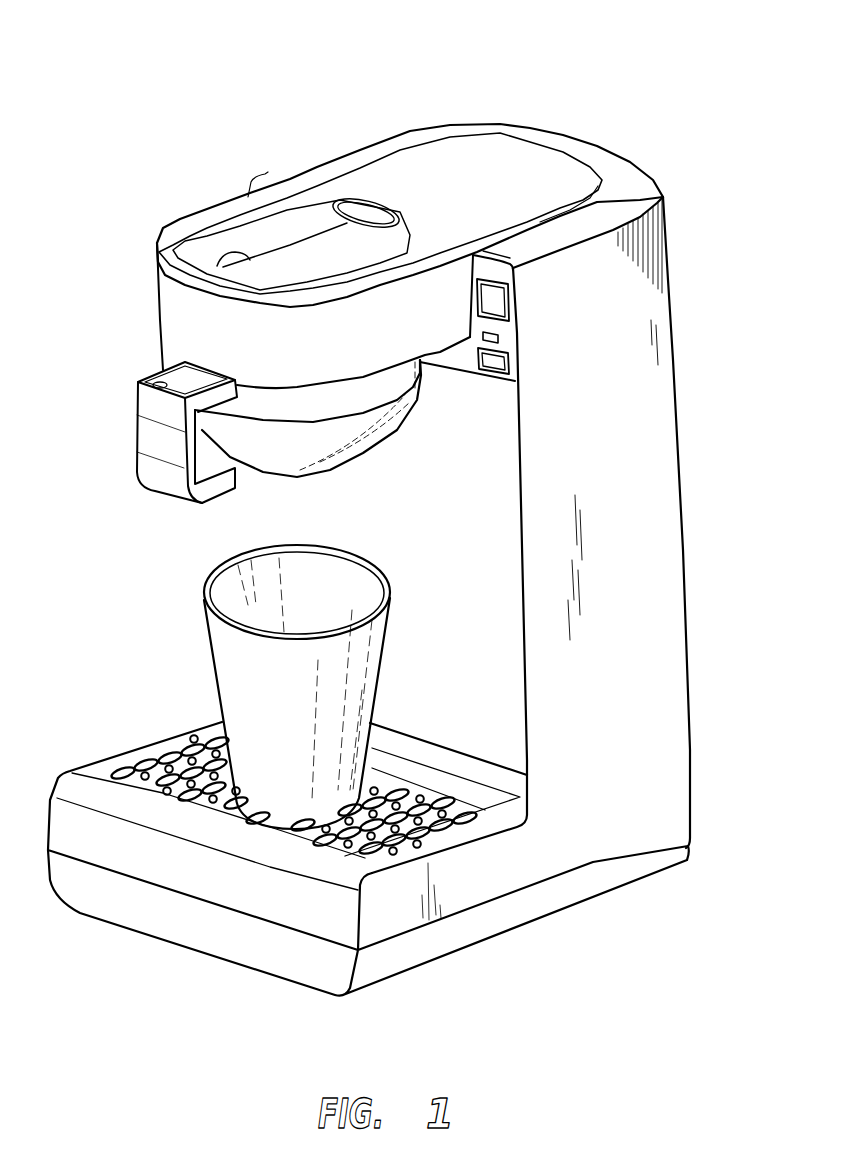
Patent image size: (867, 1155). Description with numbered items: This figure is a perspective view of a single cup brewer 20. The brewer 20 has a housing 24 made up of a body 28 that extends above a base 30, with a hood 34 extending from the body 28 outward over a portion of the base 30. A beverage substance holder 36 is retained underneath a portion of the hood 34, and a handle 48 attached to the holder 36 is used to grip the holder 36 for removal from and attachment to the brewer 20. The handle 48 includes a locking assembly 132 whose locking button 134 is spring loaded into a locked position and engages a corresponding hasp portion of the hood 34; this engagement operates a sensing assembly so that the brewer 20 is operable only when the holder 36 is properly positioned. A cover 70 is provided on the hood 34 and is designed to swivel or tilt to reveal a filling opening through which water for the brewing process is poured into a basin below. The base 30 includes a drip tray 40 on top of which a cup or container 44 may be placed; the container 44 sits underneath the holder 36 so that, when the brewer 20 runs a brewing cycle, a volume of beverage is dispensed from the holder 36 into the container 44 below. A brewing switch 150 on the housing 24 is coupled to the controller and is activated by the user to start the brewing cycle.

The brewer 20 is at (493, 95).
The housing 24 is at (709, 226).
The body 28 is at (678, 503).
The base 30 is at (593, 861).
The hood 34 is at (165, 312).
The beverage substance holder 36 is at (108, 448).
The drip tray 40 is at (420, 843).
The container 44 is at (217, 698).
The handle 48 is at (157, 433).
The cover 70 is at (232, 226).
The locking assembly 132 is at (150, 385).
The locking button 134 is at (157, 357).
The brewing switch 150 is at (493, 305).